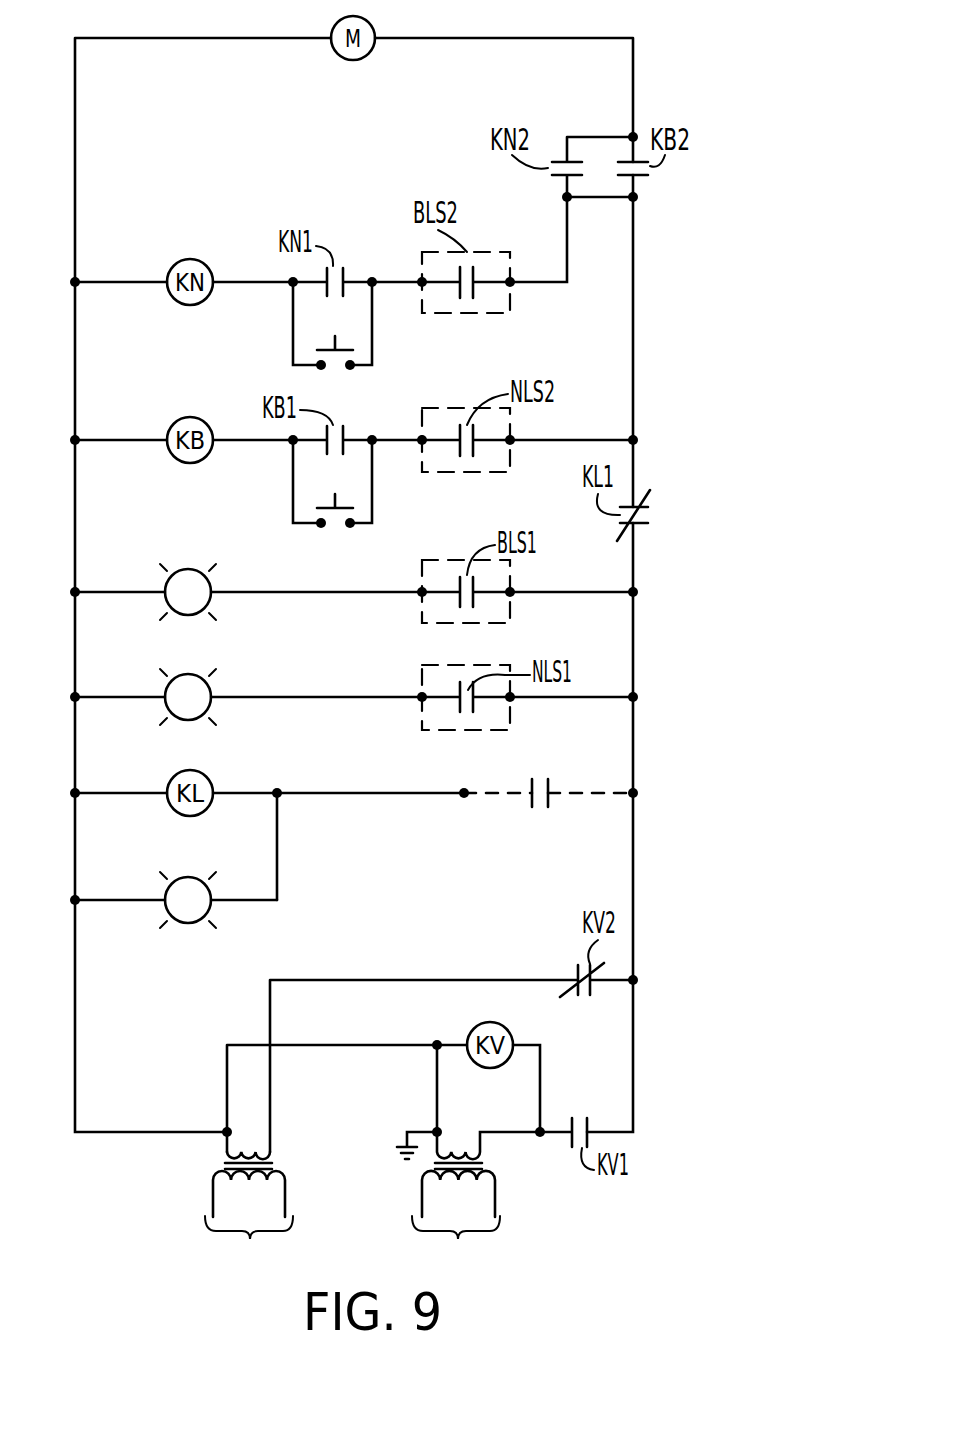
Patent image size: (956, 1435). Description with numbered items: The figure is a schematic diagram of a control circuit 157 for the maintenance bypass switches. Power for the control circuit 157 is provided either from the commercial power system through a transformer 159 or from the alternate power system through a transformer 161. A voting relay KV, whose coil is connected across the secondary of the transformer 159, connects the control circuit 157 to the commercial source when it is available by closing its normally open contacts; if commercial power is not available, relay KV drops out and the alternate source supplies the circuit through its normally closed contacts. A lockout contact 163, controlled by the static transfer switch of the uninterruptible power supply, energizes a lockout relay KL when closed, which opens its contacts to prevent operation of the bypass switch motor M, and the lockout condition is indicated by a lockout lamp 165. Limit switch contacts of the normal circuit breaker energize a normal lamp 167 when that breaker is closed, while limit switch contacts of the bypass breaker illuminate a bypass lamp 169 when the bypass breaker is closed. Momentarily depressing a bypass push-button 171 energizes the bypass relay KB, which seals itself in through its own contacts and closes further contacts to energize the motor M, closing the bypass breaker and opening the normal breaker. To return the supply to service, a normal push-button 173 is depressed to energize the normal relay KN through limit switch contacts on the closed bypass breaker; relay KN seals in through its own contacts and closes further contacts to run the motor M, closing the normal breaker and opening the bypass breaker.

The control circuit 157 is at (705, 1074).
The transformer 159 is at (494, 1178).
The transformer 161 is at (284, 1178).
The lockout contact 163 is at (542, 781).
The lockout lamp 165 is at (185, 876).
The normal lamp 167 is at (185, 673).
The bypass lamp 169 is at (185, 568).
The bypass push-button 171 is at (318, 506).
The normal push-button 173 is at (318, 348).